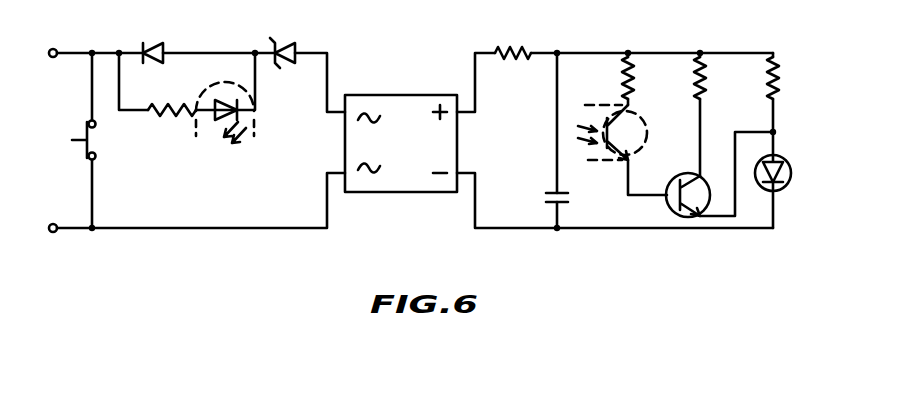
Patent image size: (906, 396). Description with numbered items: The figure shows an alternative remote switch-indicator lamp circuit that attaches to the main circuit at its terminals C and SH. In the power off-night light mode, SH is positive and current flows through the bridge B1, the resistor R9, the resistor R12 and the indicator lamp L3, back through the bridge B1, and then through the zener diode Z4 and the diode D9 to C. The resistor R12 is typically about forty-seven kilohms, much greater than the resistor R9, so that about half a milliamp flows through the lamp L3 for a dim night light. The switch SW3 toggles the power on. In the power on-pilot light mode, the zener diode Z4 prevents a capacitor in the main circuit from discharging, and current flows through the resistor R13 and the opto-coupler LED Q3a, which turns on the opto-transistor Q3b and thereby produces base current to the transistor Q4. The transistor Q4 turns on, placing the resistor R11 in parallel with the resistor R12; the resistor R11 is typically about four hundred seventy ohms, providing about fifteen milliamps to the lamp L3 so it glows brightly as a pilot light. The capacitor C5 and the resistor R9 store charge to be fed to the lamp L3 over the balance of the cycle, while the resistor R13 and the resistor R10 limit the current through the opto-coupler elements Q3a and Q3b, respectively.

The C terminal C is at (45, 52).
The SH terminal SH is at (40, 229).
The switch SW3 is at (61, 140).
The diode D9 is at (157, 37).
The zener diode Z4 is at (285, 41).
The resistor R13 is at (168, 124).
The opto-coupler LED Q3a is at (225, 126).
The bridge B1 is at (401, 128).
The resistor R9 is at (513, 37).
The capacitor C5 is at (544, 197).
The resistor R10 is at (647, 78).
The resistor R11 is at (717, 78).
The resistor R12 is at (792, 78).
The opto-transistor Q3b is at (631, 132).
The transistor Q4 is at (674, 199).
The indicator lamp L3 is at (790, 179).